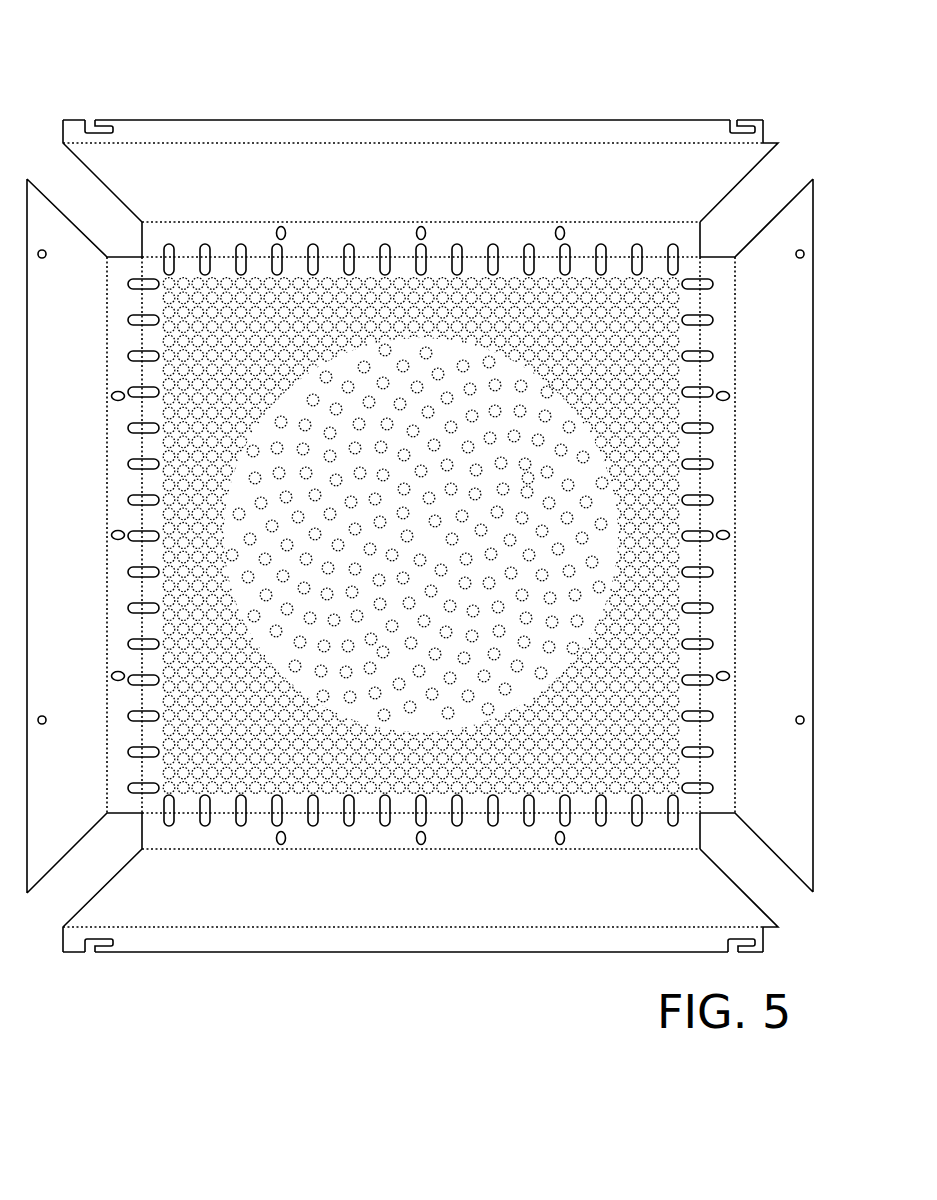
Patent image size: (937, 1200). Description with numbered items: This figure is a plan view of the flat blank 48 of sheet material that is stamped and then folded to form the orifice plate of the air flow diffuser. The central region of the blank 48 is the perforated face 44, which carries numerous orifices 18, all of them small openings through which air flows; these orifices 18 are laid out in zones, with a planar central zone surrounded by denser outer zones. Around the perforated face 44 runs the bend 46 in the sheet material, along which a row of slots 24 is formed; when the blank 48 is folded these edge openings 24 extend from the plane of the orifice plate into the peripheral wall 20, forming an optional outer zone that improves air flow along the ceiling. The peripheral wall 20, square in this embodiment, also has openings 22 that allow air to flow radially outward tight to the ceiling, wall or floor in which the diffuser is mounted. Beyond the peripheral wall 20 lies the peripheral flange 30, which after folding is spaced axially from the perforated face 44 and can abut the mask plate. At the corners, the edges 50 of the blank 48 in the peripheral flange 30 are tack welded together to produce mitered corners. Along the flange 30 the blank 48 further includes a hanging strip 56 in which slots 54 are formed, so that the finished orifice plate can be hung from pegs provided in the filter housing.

The orifices 18 is at (583, 457).
The peripheral wall 20 is at (583, 235).
The openings 22 is at (425, 222).
The edge openings 24 is at (350, 248).
The peripheral flange 30 is at (306, 896).
The perforated face 44 is at (383, 652).
The bend 46 is at (474, 813).
The blank 48 is at (254, 165).
The edges 50 is at (752, 853).
The slots 54 is at (737, 950).
The hanging strip 56 is at (193, 937).